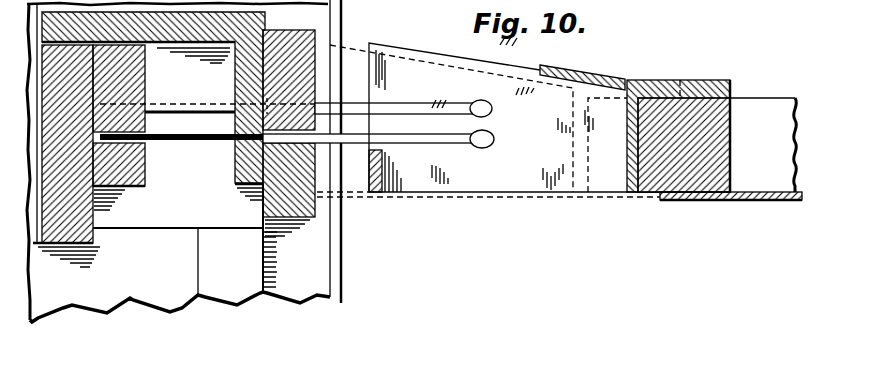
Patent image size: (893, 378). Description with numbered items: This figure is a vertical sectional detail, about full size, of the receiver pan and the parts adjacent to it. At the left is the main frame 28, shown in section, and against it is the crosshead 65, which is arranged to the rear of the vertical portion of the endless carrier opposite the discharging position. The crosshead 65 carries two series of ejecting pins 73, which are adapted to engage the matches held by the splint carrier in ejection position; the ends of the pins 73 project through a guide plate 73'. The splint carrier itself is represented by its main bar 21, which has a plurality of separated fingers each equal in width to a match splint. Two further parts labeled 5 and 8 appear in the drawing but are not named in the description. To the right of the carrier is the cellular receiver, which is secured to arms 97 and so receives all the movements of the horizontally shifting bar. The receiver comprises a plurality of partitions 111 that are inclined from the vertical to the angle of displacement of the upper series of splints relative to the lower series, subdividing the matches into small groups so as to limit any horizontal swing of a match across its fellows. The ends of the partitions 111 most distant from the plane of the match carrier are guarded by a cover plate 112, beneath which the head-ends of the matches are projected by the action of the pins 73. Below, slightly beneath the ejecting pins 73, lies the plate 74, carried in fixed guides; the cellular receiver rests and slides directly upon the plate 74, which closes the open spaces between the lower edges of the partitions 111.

The main frame 28 is at (112, 308).
The crosshead 65 is at (92, 245).
The ejecting pins 73 is at (181, 155).
The guide plate 73' is at (318, 93).
The block 5 is at (295, 213).
The main bar 21 is at (240, 296).
The rod 8 is at (380, 133).
The partitions 111 is at (463, 65).
The cover plate 112 is at (603, 78).
The arms 97 is at (755, 98).
The plate 74 is at (760, 201).